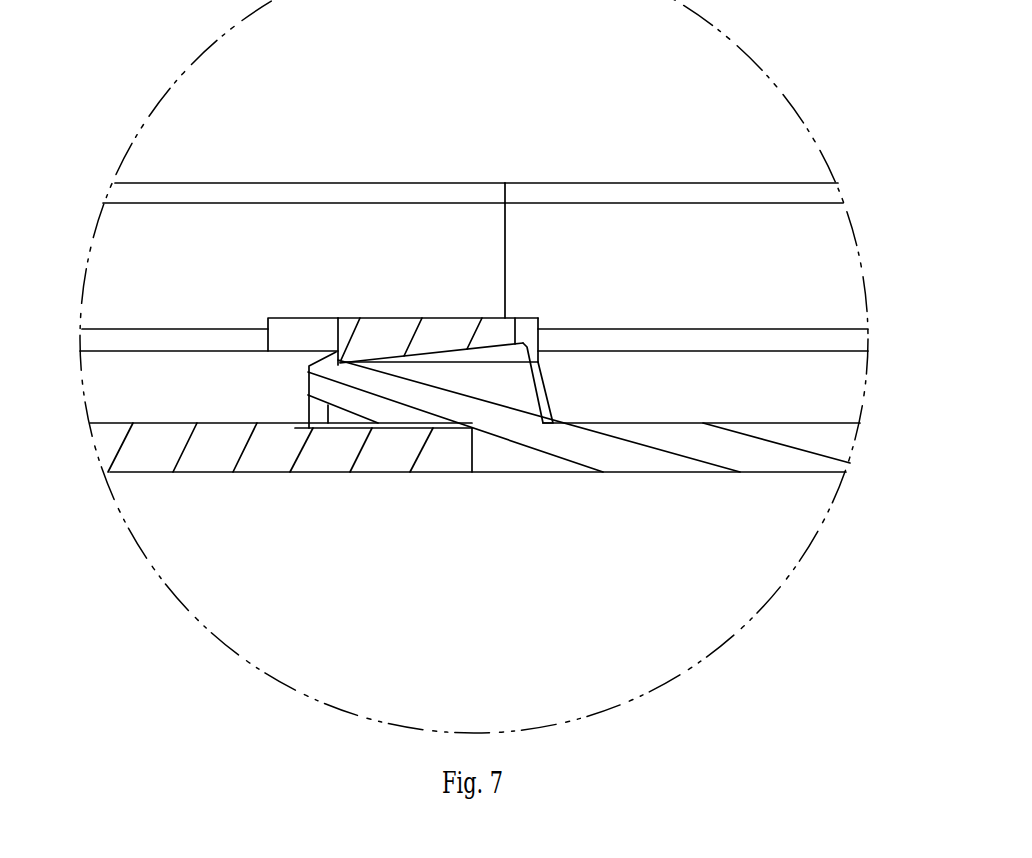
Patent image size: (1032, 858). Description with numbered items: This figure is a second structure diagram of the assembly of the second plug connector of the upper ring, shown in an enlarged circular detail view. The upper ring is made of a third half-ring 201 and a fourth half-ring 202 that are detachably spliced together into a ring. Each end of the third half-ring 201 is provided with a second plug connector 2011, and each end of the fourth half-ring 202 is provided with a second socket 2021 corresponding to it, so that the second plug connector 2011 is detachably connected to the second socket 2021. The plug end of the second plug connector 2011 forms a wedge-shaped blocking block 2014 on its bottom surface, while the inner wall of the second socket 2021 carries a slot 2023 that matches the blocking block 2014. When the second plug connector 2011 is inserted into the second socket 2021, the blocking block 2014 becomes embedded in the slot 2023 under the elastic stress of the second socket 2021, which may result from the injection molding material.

The third half-ring 201 is at (813, 190).
The fourth half-ring 202 is at (133, 186).
The second plug connector 2011 is at (545, 388).
The blocking block 2014 is at (318, 373).
The second socket 2021 is at (377, 318).
The slot 2023 is at (300, 318).